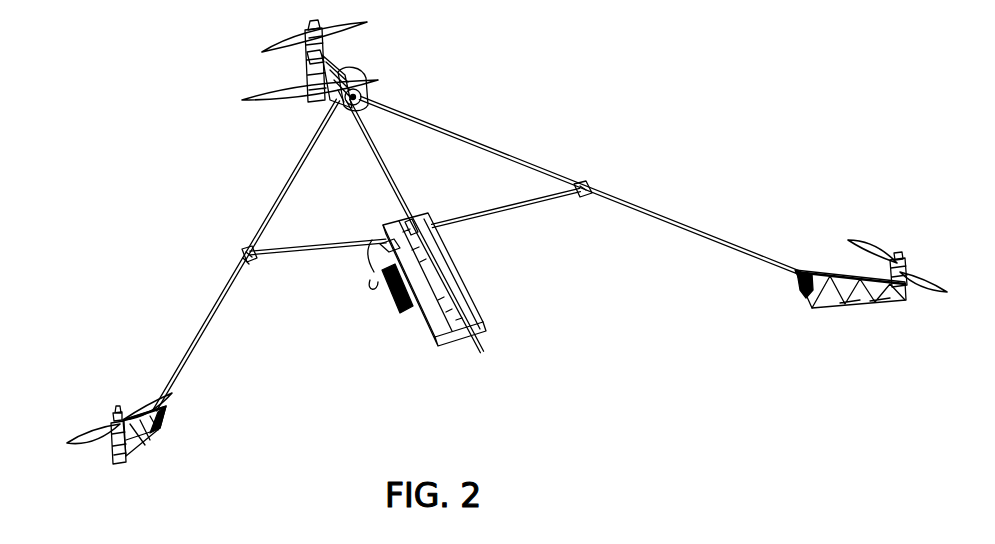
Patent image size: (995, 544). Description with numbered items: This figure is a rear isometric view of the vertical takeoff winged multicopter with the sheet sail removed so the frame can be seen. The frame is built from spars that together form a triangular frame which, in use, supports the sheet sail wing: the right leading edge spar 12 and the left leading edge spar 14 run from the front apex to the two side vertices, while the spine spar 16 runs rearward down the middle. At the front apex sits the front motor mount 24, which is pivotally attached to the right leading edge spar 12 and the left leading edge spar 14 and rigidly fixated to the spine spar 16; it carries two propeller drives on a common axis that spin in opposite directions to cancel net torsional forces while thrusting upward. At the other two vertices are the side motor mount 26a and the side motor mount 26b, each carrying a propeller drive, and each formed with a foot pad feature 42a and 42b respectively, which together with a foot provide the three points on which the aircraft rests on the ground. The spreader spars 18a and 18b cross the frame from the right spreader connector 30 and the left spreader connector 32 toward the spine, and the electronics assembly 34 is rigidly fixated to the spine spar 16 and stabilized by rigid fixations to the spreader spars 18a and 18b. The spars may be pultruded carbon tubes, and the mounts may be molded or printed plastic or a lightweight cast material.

The right leading edge spar 12 is at (529, 160).
The left leading edge spar 14 is at (273, 194).
The spine spar 16 is at (393, 190).
The right spreader spar 18a is at (332, 258).
The left spreader spar 18b is at (536, 223).
The front motor mount 24 is at (357, 76).
The side motor mount 26a is at (833, 272).
The side motor mount 26b is at (160, 440).
The right spreader connector 30 is at (587, 182).
The left spreader connector 32 is at (244, 253).
The electronics assembly 34 is at (466, 265).
The foot pad feature 42a is at (814, 308).
The foot pad feature 42b is at (152, 455).